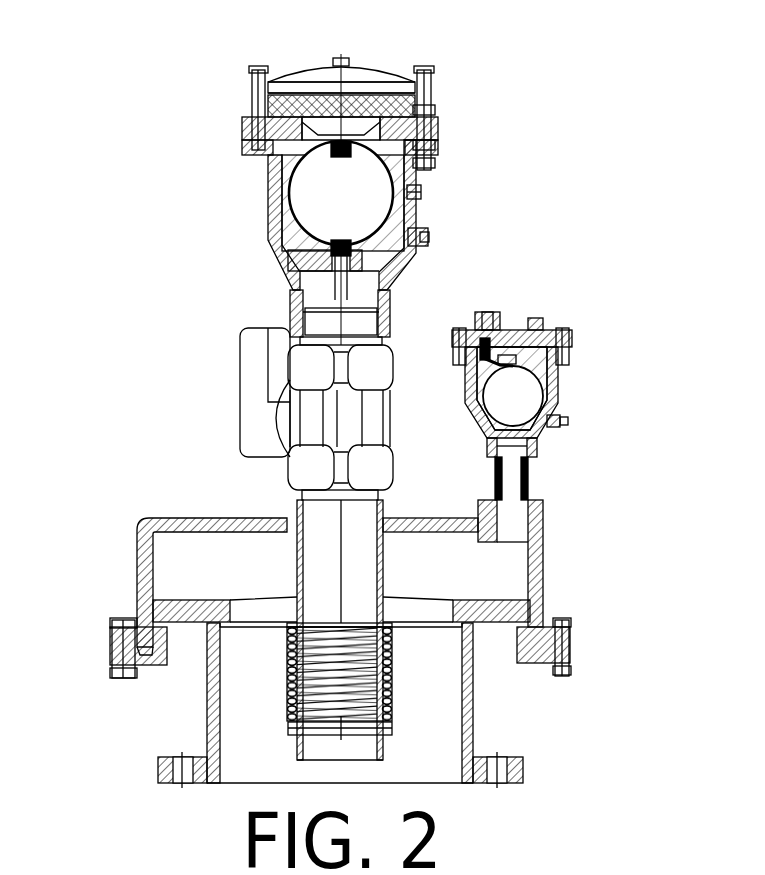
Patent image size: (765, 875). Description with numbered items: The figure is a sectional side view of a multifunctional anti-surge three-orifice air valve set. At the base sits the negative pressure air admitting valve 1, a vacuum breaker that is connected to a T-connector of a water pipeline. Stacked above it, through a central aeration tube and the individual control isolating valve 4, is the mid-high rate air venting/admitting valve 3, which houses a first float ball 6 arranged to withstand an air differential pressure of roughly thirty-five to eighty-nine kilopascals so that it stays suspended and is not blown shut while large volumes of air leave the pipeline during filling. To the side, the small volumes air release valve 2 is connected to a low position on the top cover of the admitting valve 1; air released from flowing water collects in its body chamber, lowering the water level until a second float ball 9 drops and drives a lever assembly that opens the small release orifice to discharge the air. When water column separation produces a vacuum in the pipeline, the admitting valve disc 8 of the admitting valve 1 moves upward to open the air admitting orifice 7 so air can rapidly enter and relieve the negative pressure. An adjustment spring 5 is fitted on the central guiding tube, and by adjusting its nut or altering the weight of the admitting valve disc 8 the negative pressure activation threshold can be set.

The negative pressure air admitting valve 1 is at (217, 572).
The small volumes air release valve 2 is at (568, 333).
The mid-high rate air venting/admitting valve 3 is at (242, 118).
The individual control isolating valve 4 is at (312, 378).
The adjustment spring 5 is at (370, 675).
The first float ball 6 is at (403, 190).
The air admitting orifice 7 is at (188, 645).
The admitting valve disc 8 is at (500, 600).
The second float ball 9 is at (513, 367).